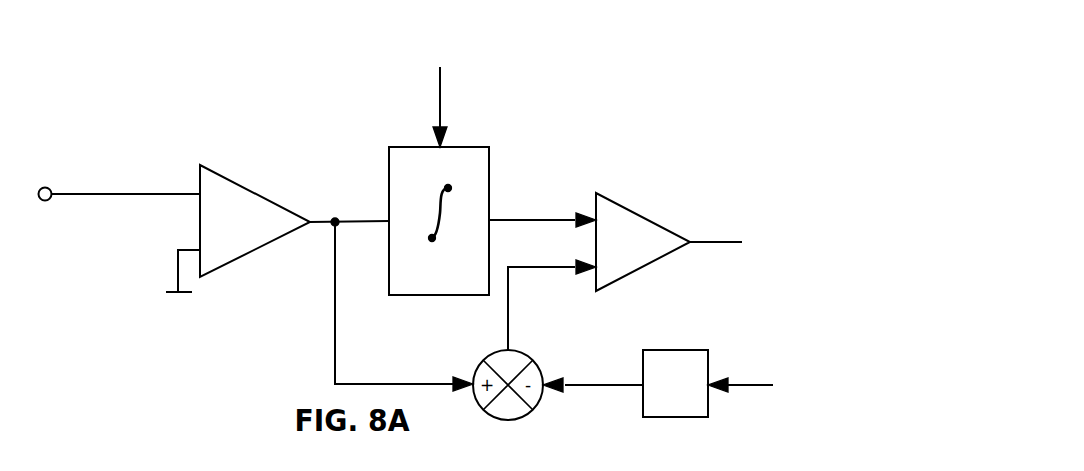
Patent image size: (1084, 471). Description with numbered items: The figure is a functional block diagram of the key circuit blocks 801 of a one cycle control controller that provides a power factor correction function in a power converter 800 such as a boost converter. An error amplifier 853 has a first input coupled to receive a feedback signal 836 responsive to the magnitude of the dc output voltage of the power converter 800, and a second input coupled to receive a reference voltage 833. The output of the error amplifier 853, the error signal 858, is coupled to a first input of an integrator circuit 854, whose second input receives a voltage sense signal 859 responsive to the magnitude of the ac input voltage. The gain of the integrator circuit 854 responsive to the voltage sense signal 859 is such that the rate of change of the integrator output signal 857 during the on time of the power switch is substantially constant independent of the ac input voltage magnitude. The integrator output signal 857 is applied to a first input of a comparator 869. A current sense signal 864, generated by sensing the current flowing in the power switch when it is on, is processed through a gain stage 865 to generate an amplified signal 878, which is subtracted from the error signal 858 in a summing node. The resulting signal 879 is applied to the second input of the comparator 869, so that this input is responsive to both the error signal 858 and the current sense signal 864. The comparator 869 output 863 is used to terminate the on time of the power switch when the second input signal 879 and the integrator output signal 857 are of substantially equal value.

The circuit blocks 801 is at (662, 36).
The power converter 800 is at (819, 184).
The feedback signal 836 is at (46, 247).
The error amplifier 853 is at (226, 235).
The reference voltage 833 is at (195, 300).
The VERR signal 858 is at (327, 183).
The voltage sense signal 859 is at (445, 80).
The integrator circuit 854 is at (500, 163).
The integrator output signal 857 is at (530, 208).
The comparator 869 is at (613, 254).
The comparator output 863 is at (723, 235).
The resulting signal 879 is at (508, 340).
The amplified signal 878 is at (600, 377).
The gain stage 865 is at (687, 343).
The current sense signal 864 is at (753, 372).